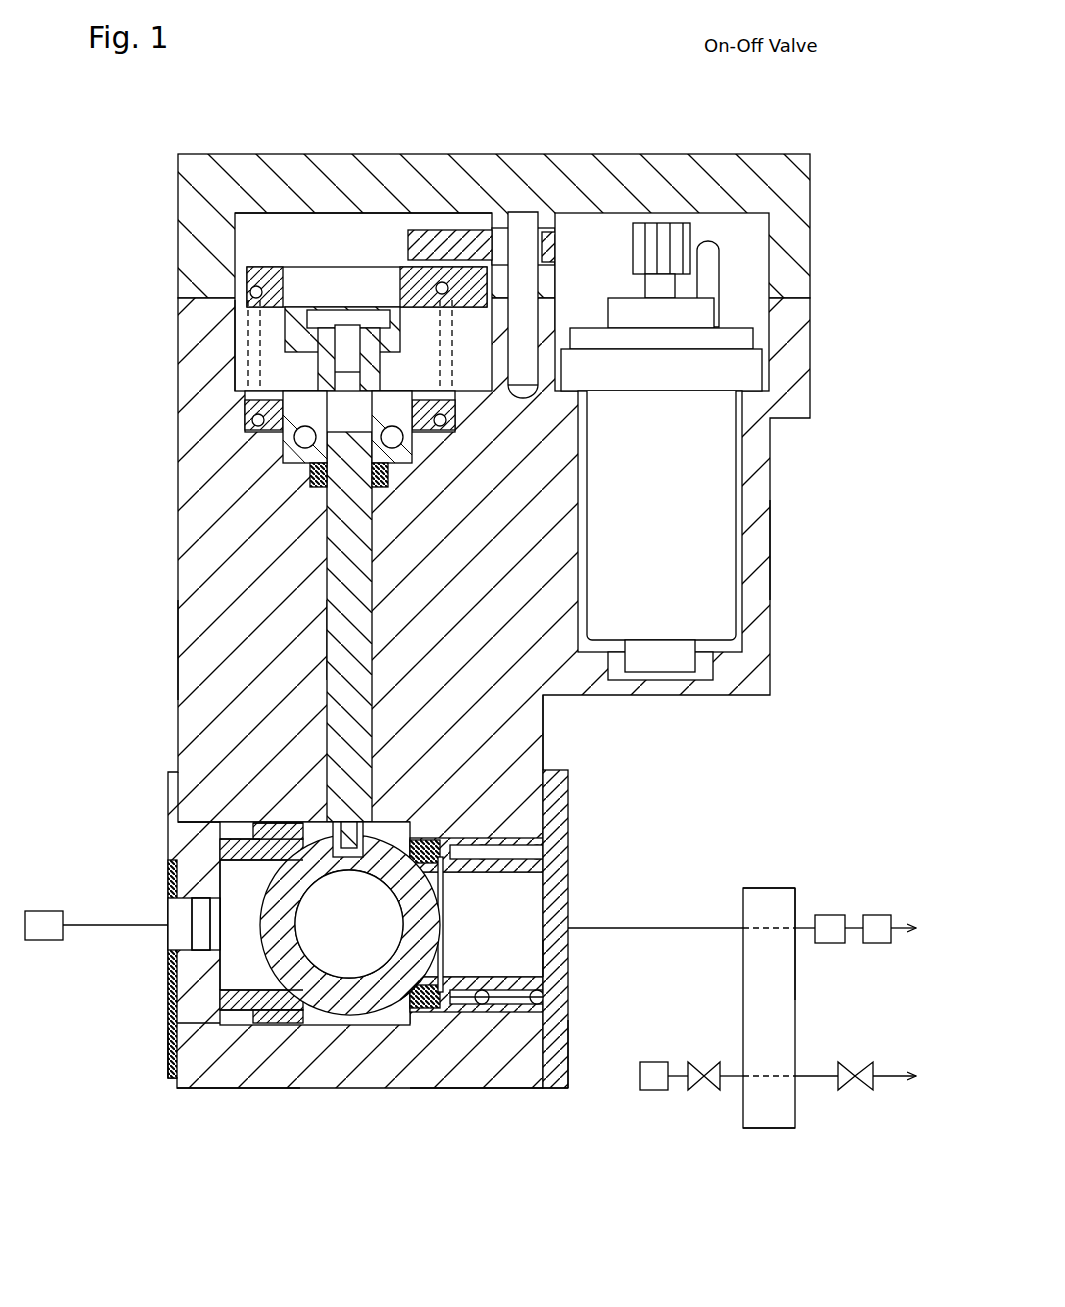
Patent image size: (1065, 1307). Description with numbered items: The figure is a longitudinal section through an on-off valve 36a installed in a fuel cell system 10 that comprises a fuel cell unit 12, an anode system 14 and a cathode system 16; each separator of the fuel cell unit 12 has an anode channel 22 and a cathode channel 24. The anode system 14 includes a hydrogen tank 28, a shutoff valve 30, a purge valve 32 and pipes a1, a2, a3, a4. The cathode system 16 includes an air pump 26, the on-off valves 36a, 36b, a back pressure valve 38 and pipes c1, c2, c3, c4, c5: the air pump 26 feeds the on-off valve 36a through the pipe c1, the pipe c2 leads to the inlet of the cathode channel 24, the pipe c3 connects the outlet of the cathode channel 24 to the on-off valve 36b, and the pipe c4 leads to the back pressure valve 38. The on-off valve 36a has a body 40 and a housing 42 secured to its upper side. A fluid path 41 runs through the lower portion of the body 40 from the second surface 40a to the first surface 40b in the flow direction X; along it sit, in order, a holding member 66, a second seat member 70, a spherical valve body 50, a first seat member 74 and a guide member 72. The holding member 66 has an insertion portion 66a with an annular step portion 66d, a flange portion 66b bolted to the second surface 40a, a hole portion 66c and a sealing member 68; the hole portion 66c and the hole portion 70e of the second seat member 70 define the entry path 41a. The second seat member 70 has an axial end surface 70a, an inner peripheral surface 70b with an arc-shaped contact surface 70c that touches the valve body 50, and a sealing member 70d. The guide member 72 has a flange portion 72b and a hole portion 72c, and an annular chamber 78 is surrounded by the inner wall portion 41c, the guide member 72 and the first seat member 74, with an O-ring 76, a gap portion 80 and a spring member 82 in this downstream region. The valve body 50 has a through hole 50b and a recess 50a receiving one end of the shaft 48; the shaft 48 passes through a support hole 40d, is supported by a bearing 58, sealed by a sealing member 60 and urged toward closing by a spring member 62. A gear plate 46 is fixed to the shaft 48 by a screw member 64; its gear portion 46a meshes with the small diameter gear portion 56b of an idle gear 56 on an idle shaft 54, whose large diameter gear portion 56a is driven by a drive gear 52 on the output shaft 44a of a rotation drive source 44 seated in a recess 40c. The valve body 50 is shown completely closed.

The fuel cell system 10 is at (838, 835).
The fuel cell unit 12 is at (752, 887).
The anode system 14 is at (790, 1135).
The cathode system 16 is at (795, 872).
The anode channel 22 is at (764, 1072).
The cathode channel 24 is at (764, 935).
The air pump 26 is at (42, 910).
The hydrogen tank 28 is at (653, 1092).
The shutoff valve 30 is at (704, 1080).
The purge valve 32 is at (857, 1070).
The on-off valve 36a is at (608, 105).
The on-off valve 36b is at (835, 914).
The back pressure valve 38 is at (885, 914).
The body 40 is at (548, 745).
The second surface 40a is at (178, 650).
The first surface 40b is at (543, 728).
The recess 40c is at (742, 565).
The support hole 40d is at (327, 640).
The fluid path 41 is at (256, 934).
The entry path 41a is at (105, 935).
The inner wall portion 41c is at (568, 1086).
The housing 42 is at (775, 170).
The rotation drive source 44 is at (700, 655).
The output shaft 44a is at (680, 288).
The gear plate 46 is at (290, 258).
The gear portion 46a is at (450, 245).
The shaft 48 is at (327, 565).
The valve body 50 is at (360, 1013).
The recess 50a is at (335, 835).
The through hole 50b is at (420, 1005).
The drive gear 52 is at (665, 222).
The idle shaft 54 is at (522, 225).
The idle gear 56 is at (575, 265).
The large diameter gear portion 56a is at (690, 240).
The small diameter gear portion 56b is at (558, 250).
The bearing 58 is at (260, 435).
The sealing member 60 is at (310, 478).
The spring member 62 is at (228, 360).
The screw member 64 is at (350, 330).
The holding member 66 is at (162, 1075).
The insertion portion 66a is at (200, 1060).
The flange portion 66b is at (178, 1045).
The hole portion 66c is at (195, 932).
The annular step portion 66d is at (262, 1028).
The sealing member 68 is at (212, 828).
The second seat member 70 is at (290, 1012).
The axial end surface 70a is at (240, 832).
The inner peripheral surface 70b is at (222, 925).
The contact surface 70c is at (262, 840).
The sealing member 70d is at (235, 855).
The hole portion 70e is at (240, 1000).
The guide member 72 is at (572, 838).
The flange portion 72b is at (568, 1045).
The hole portion 72c is at (505, 962).
The first seat member 74 is at (442, 985).
The O-ring 76 is at (470, 868).
The chamber 78 is at (490, 855).
The gap portion 80 is at (485, 1005).
The spring member 82 is at (470, 1000).
The fluid flow direction X is at (452, 925).
The pipe c1 is at (80, 924).
The pipe c2 is at (686, 927).
The pipe c3 is at (806, 932).
The pipe c4 is at (853, 932).
The pipe c5 is at (900, 932).
The pipe a1 is at (678, 1074).
The pipe a2 is at (730, 1074).
The pipe a3 is at (810, 1080).
The pipe a4 is at (892, 1080).